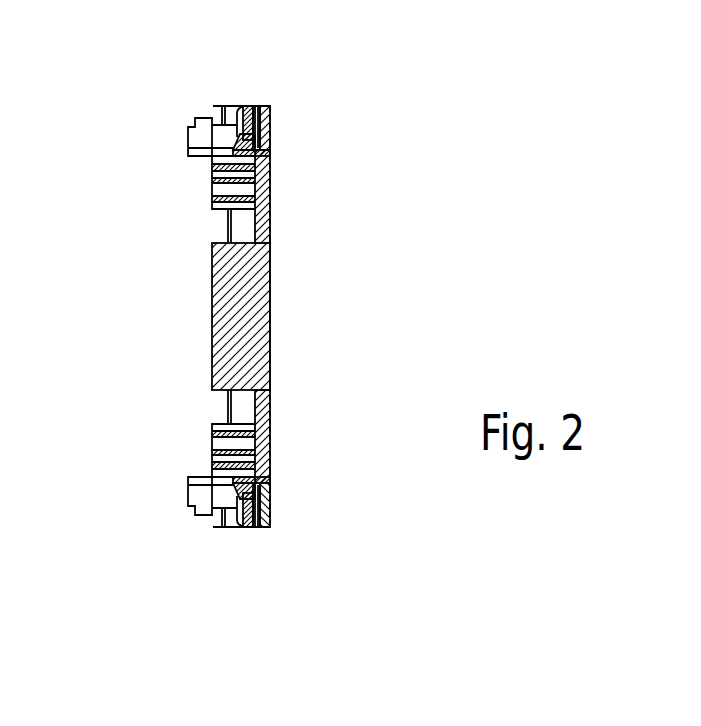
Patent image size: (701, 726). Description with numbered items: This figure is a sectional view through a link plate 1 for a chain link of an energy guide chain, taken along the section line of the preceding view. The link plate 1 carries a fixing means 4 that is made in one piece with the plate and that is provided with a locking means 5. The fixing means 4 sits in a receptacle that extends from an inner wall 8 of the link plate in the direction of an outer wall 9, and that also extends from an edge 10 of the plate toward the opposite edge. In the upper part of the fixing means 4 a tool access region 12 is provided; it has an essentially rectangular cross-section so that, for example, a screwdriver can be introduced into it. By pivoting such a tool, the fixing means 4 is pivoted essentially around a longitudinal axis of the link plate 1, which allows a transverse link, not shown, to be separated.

The link plate 1 is at (364, 171).
The fixing means 4 is at (163, 122).
The locking means 5 is at (237, 143).
The inner wall 8 is at (210, 298).
The outer wall 9 is at (271, 290).
The edge 10 is at (267, 106).
The tool access region 12 is at (257, 105).